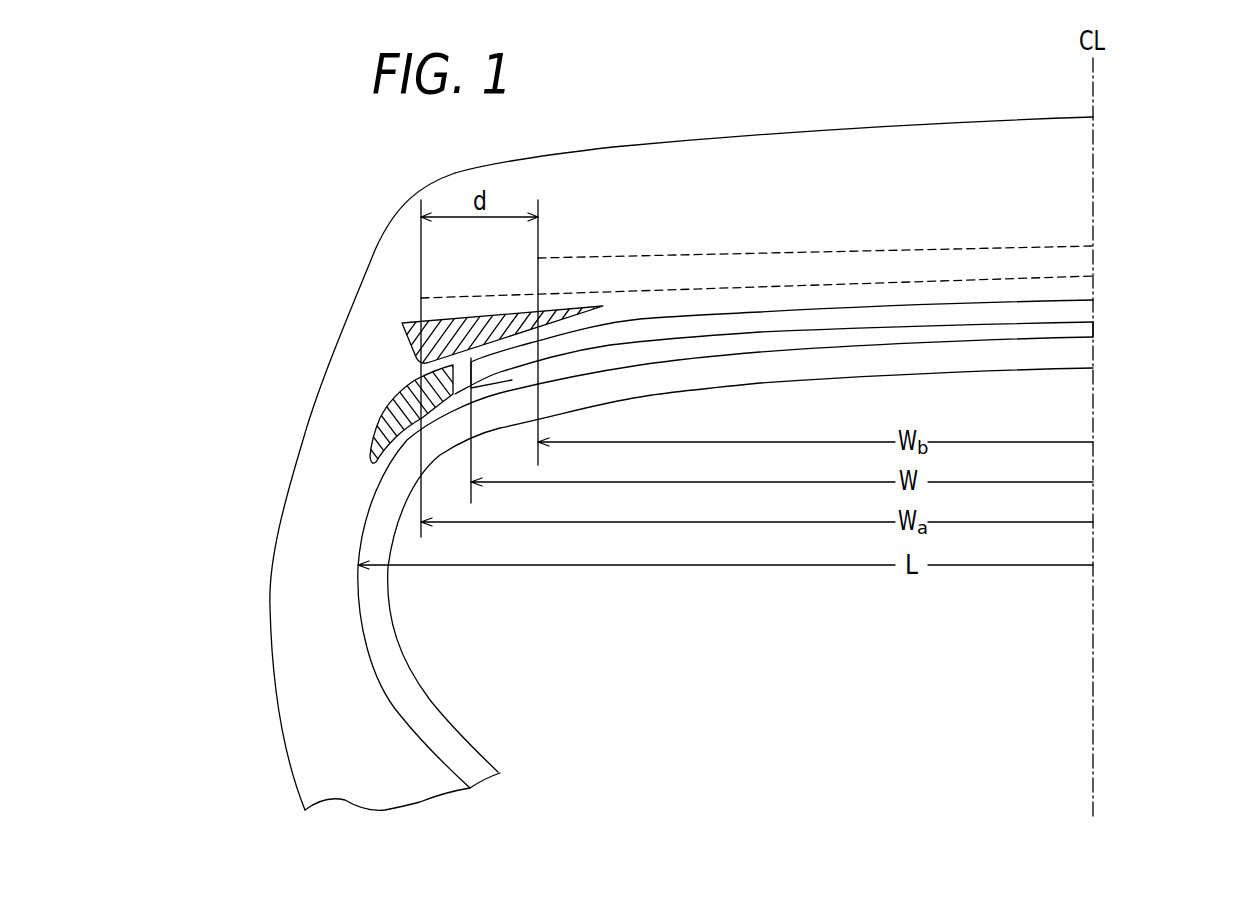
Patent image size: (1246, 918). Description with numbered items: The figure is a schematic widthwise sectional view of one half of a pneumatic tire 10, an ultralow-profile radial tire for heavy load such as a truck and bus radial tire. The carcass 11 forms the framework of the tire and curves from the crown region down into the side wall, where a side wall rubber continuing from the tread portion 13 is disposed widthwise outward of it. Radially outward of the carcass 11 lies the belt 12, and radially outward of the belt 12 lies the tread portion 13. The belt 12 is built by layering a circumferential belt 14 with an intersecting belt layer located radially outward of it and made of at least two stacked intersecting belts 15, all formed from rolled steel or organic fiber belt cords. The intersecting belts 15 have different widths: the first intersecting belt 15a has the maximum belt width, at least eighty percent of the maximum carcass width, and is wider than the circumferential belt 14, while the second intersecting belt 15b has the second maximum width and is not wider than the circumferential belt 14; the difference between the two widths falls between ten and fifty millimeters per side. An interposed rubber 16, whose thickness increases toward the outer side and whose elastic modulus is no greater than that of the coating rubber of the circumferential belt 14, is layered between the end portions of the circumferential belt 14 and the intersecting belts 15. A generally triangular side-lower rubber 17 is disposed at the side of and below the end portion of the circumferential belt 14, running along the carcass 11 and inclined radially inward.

The pneumatic tire 10 is at (335, 202).
The carcass 11 is at (392, 675).
The belt 12 is at (813, 276).
The tread portion 13 is at (815, 128).
The circumferential belt 14 is at (660, 328).
The intersecting belt 15 is at (786, 228).
The first intersecting belt 15a is at (727, 283).
The second intersecting belt 15b is at (873, 248).
The interposed rubber 16 is at (404, 332).
The side-lower rubber 17 is at (380, 421).